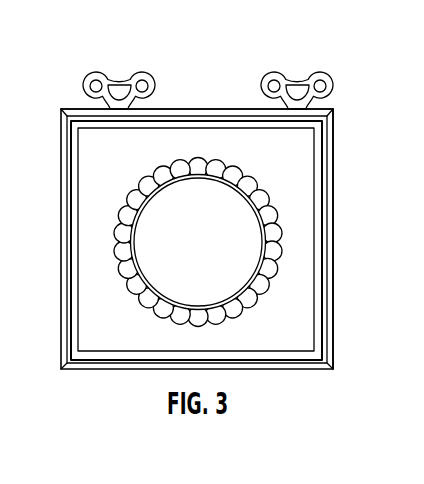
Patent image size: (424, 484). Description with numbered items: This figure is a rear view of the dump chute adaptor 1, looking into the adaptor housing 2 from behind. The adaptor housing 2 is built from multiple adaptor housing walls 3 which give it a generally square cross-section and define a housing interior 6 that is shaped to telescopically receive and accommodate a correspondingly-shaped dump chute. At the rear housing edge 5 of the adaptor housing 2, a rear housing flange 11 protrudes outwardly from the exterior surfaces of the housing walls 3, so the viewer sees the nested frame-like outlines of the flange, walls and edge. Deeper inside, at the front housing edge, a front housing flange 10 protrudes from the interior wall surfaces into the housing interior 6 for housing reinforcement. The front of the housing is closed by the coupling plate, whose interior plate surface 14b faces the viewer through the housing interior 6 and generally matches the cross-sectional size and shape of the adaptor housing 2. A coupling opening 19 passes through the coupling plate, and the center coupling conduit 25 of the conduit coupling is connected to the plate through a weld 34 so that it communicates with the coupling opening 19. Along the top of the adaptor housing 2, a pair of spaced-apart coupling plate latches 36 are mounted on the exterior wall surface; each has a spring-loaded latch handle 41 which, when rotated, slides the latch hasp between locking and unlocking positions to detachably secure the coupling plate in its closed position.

The dump chute adaptor 1 is at (60, 37).
The adaptor housing 2 is at (349, 252).
The adaptor housing wall 3 is at (180, 109).
The rear housing edge 5 is at (327, 141).
The housing interior 6 is at (289, 190).
The front housing flange 10 is at (144, 351).
The rear housing flange 11 is at (333, 323).
The interior plate surface 14b is at (150, 178).
The coupling opening 19 is at (230, 213).
The center coupling conduit 25 is at (160, 178).
The weld 34 is at (241, 316).
The coupling plate latch 36 is at (134, 56).
The latch handle 41 is at (84, 79).